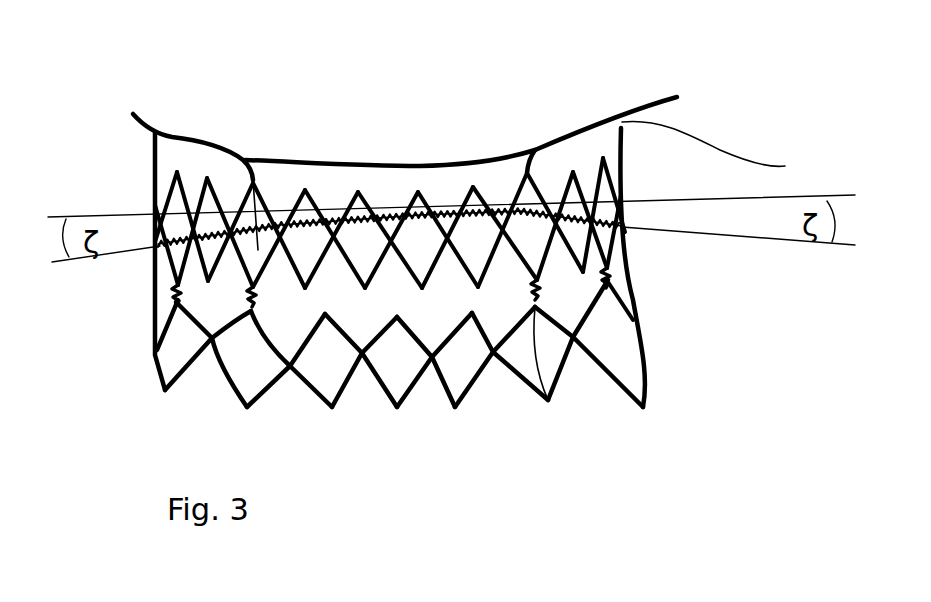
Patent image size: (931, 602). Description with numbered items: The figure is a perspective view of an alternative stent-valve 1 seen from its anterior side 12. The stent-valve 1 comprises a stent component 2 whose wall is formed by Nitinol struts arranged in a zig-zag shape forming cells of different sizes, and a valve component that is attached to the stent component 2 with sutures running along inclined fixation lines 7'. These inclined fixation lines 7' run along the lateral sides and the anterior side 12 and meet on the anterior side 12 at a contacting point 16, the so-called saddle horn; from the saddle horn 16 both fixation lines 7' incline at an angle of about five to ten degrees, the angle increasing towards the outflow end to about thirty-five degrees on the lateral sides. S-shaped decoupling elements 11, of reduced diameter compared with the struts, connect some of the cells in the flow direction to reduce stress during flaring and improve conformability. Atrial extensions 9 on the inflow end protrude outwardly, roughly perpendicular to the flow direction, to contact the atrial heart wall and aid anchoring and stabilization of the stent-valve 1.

The stent-valve 1 is at (218, 81).
The stent component 2 is at (155, 281).
The inclined fixation lines 7' is at (429, 368).
The atrial extensions 9 is at (718, 154).
The decoupling elements 11 is at (553, 377).
The anterior side 12 is at (400, 422).
The contacting point (saddle horn) 16 is at (398, 205).